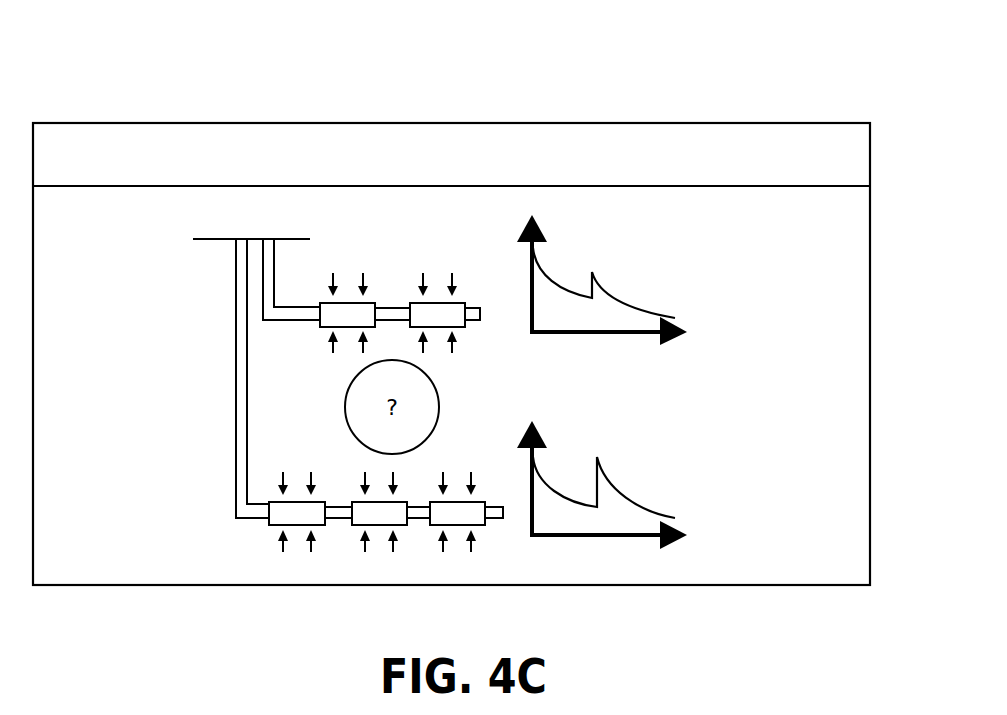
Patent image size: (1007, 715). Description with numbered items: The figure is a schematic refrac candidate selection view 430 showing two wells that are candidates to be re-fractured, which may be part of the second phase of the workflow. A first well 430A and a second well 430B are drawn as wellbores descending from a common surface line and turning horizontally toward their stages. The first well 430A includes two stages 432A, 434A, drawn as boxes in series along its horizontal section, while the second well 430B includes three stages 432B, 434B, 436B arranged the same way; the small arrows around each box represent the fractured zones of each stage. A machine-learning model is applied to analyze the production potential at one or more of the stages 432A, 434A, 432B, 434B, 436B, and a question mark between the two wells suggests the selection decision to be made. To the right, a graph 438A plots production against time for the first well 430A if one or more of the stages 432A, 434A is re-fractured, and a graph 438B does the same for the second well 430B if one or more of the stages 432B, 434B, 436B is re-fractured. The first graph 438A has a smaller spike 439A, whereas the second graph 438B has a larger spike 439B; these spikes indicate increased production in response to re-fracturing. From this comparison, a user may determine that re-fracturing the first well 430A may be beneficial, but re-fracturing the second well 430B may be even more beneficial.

The refrac candidate selection view 430 is at (657, 48).
The first well 430A is at (268, 235).
The second well 430B is at (238, 236).
The stage 432A is at (350, 313).
The stage 434A is at (438, 313).
The stage 432B is at (303, 518).
The stage 434B is at (385, 517).
The stage 436B is at (458, 517).
The graph 438A is at (619, 286).
The graph 438B is at (619, 482).
The smaller spike 439A is at (592, 272).
The larger spike 439B is at (597, 457).